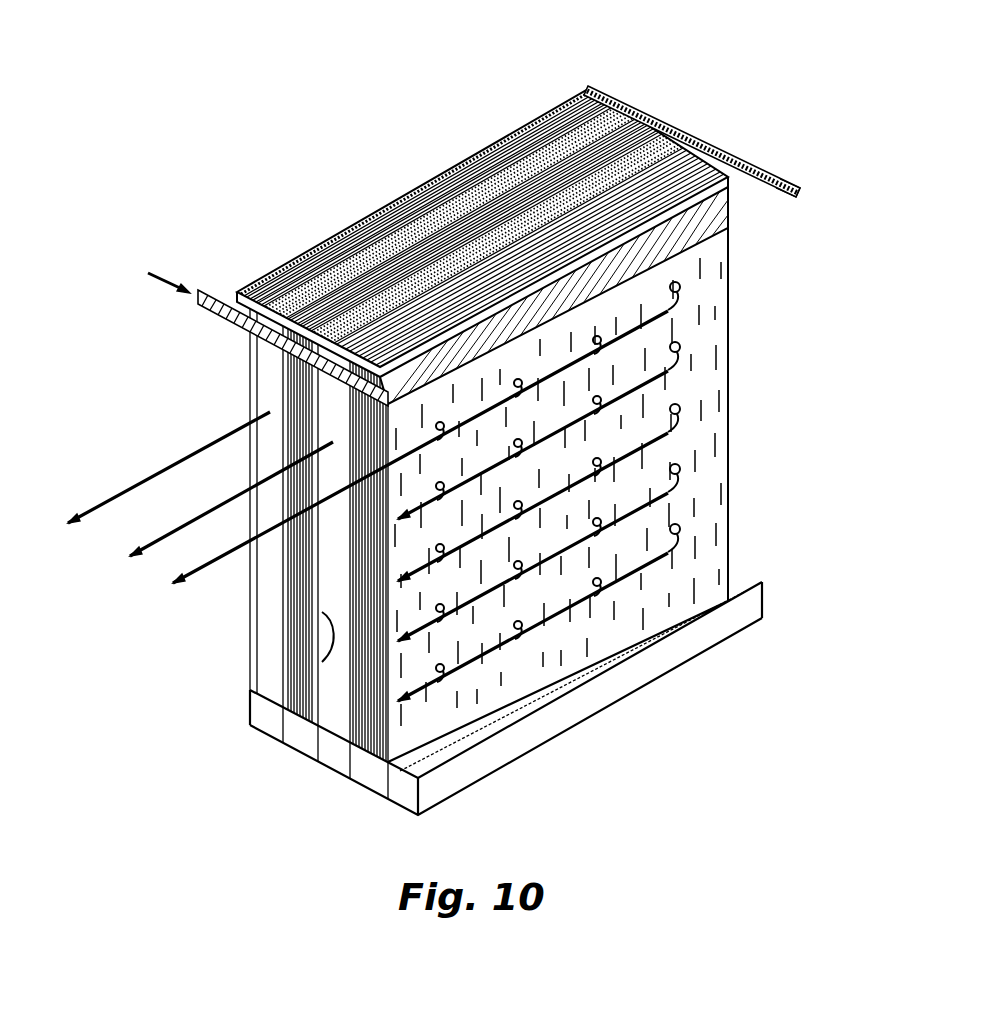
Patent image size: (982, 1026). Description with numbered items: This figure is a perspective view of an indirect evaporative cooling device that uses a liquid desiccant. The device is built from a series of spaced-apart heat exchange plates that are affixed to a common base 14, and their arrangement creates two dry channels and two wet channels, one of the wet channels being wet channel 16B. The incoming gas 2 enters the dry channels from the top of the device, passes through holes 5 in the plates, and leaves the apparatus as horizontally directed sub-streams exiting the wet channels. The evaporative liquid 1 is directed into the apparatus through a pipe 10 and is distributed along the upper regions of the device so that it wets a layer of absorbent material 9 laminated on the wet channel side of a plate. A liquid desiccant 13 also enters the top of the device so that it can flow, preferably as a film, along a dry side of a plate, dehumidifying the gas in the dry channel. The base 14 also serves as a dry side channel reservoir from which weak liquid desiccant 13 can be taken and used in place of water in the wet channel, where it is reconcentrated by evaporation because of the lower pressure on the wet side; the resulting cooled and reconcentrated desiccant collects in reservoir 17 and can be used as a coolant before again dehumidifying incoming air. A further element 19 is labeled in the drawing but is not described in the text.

The evaporative liquid 1 is at (159, 276).
The incoming gas 2 is at (471, 312).
The holes 5 is at (678, 515).
The absorbent material 9 is at (350, 660).
The pipe 10 is at (205, 306).
The liquid desiccant 13 is at (650, 198).
The base / dry side channel reservoir 14 is at (303, 733).
The wet channel 16B is at (262, 379).
The reservoir 17 is at (268, 716).
The frame band end 19 is at (762, 170).